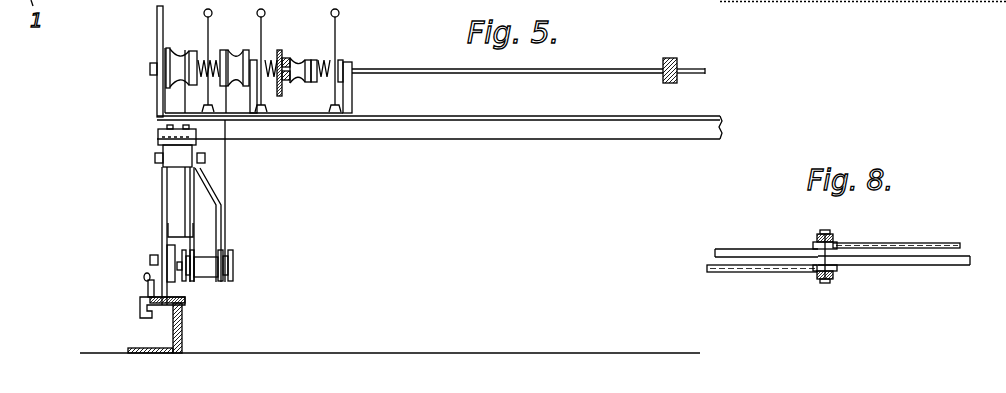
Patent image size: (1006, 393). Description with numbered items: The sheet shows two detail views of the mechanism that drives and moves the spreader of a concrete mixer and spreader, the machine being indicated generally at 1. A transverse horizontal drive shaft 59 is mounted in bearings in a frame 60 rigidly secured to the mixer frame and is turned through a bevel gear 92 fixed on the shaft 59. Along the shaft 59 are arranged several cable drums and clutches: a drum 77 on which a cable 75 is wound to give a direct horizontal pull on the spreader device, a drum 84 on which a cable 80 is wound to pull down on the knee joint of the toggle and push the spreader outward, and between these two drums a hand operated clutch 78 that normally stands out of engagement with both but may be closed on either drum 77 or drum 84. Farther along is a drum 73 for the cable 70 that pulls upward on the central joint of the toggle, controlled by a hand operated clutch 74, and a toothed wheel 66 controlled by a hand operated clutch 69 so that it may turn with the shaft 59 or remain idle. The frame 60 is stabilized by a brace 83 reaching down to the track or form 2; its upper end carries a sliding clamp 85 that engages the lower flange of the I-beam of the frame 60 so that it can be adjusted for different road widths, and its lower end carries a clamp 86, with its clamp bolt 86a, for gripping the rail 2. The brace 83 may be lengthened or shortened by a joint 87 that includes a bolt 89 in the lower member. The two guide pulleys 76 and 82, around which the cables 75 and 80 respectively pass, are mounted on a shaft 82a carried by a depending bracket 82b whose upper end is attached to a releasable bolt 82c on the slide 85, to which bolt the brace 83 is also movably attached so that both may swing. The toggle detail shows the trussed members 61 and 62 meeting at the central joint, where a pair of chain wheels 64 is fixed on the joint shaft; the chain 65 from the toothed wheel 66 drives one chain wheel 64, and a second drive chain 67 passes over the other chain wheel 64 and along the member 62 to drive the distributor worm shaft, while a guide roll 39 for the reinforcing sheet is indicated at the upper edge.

In FIG. 5, the machine 1 is at (976, 3).
In FIG. 5, the forms 2 is at (183, 333).
In FIG. 5, the frame member 39 is at (921, 3).
In FIG. 5, the drive shaft 59 is at (558, 75).
In FIG. 5, the frame 60 is at (157, 27).
In FIG. 8, the trussed member 61 is at (738, 249).
In FIG. 8, the trussed member 62 is at (939, 265).
In FIG. 8, the chain wheels 64 is at (813, 246).
In FIG. 5, the chain 65 is at (278, 50).
In FIG. 8, the chain 65 is at (771, 273).
In FIG. 5, the toothed wheel 66 is at (280, 90).
In FIG. 8, the drive chain 67 is at (953, 228).
In FIG. 5, the hand operated clutch 69 is at (260, 27).
In FIG. 5, the cable 70 is at (304, 60).
In FIG. 5, the drum 73 is at (313, 62).
In FIG. 5, the hand operated clutch 74 is at (342, 62).
In FIG. 5, the cable 75 is at (185, 191).
In FIG. 5, the guide pulley 76 is at (190, 284).
In FIG. 5, the drum 77 is at (175, 72).
In FIG. 5, the hand operated clutch 78 is at (207, 50).
In FIG. 5, the cable 80 is at (226, 202).
In FIG. 5, the guide pulley 82 is at (233, 258).
In FIG. 5, the shaft 82a is at (268, 289).
In FIG. 5, the depending bracket 82b is at (197, 174).
In FIG. 5, the releasable bolt 82c is at (155, 155).
In FIG. 5, the brace 83 is at (162, 177).
In FIG. 5, the drum 84 is at (236, 56).
In FIG. 5, the sliding clamp 85 is at (158, 134).
In FIG. 5, the clamp 86 is at (140, 302).
In FIG. 5, the clamp bolt 86a is at (146, 284).
In FIG. 5, the joint 87 is at (150, 258).
In FIG. 5, the bolt 89 is at (158, 247).
In FIG. 5, the bevel gear 92 is at (673, 58).